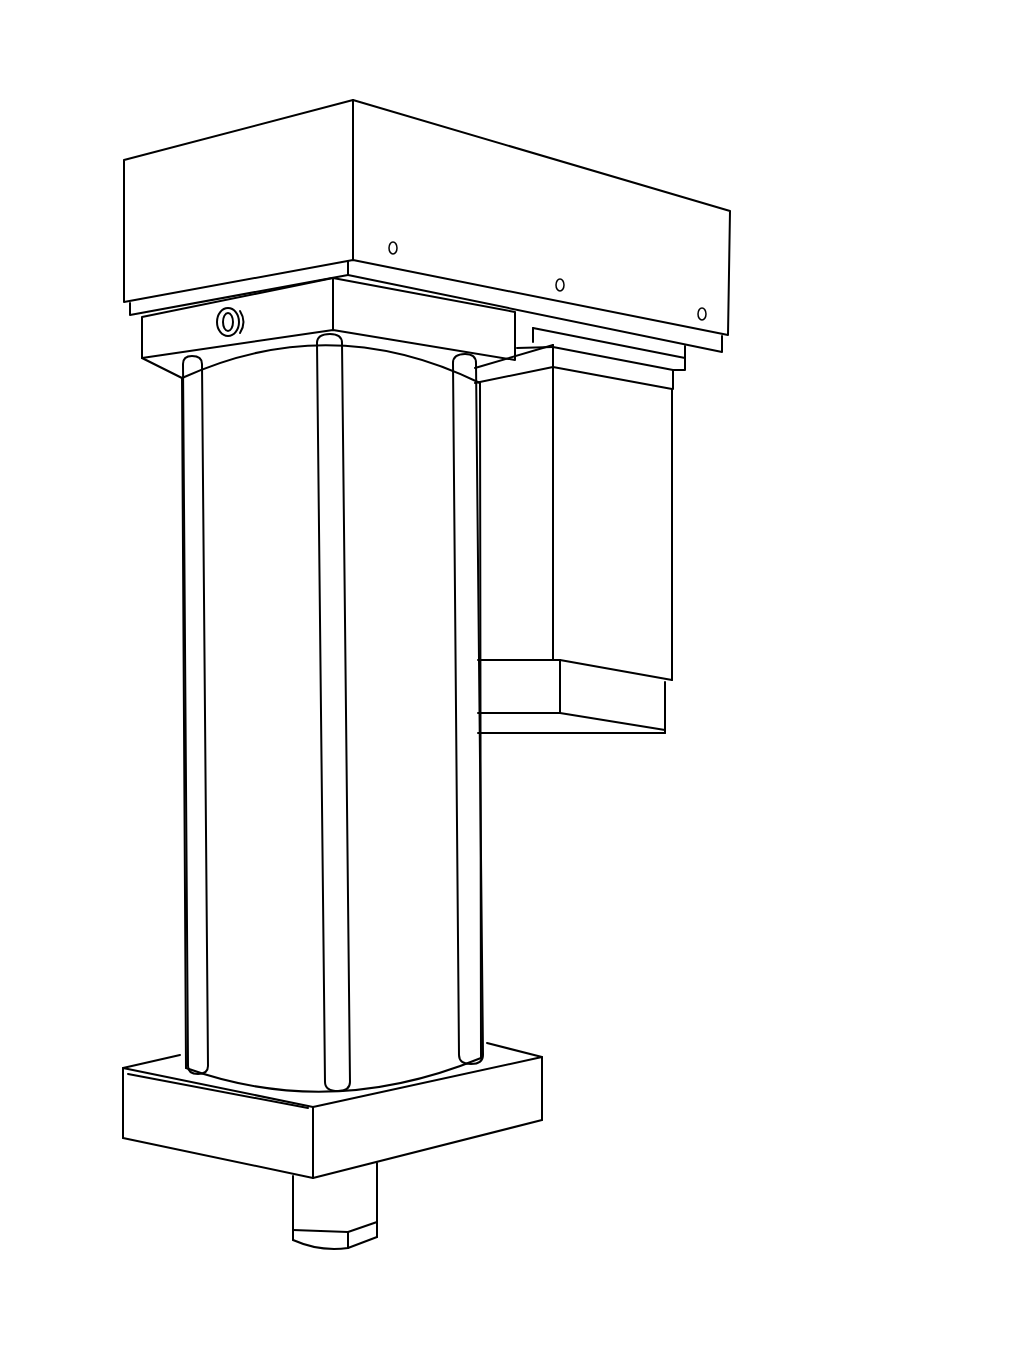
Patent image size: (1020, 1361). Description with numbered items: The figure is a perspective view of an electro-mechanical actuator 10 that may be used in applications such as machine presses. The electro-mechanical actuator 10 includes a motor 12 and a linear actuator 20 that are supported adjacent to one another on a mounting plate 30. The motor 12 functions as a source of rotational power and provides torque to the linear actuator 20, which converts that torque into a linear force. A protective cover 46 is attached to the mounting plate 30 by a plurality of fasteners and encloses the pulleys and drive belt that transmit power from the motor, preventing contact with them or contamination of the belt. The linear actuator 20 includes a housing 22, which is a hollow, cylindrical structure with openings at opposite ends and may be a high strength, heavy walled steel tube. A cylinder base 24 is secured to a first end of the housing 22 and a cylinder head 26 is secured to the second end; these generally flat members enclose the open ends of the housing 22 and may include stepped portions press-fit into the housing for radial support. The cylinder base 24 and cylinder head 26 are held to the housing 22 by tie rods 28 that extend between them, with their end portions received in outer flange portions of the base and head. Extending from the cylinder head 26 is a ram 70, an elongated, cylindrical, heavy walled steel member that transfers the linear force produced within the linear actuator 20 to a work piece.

The electro-mechanical actuator 10 is at (632, 58).
The motor 12 is at (652, 496).
The linear actuator 20 is at (158, 508).
The housing 22 is at (232, 649).
The cylinder base 24 is at (153, 337).
The cylinder head 26 is at (141, 1111).
The tie rods 28 is at (190, 826).
The mounting plate 30 is at (690, 351).
The protective cover 46 is at (716, 276).
The ram 70 is at (315, 1212).